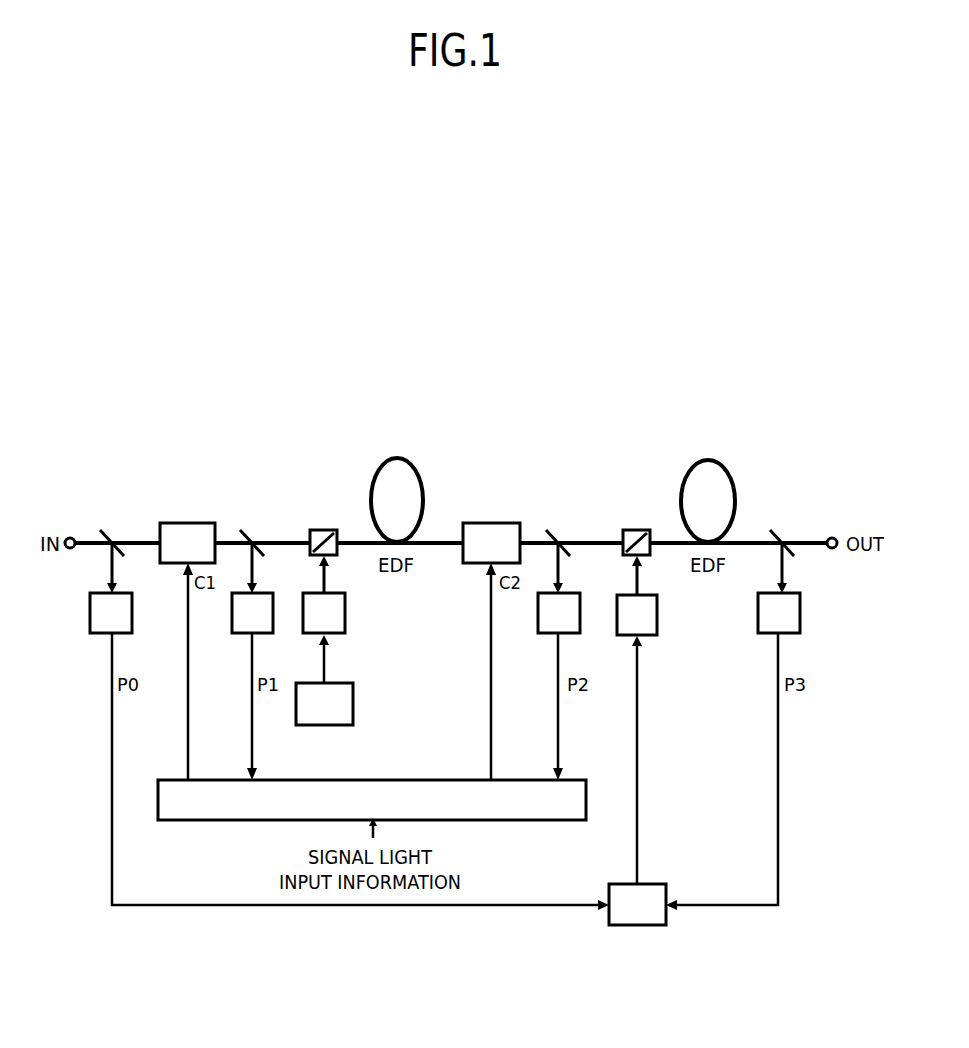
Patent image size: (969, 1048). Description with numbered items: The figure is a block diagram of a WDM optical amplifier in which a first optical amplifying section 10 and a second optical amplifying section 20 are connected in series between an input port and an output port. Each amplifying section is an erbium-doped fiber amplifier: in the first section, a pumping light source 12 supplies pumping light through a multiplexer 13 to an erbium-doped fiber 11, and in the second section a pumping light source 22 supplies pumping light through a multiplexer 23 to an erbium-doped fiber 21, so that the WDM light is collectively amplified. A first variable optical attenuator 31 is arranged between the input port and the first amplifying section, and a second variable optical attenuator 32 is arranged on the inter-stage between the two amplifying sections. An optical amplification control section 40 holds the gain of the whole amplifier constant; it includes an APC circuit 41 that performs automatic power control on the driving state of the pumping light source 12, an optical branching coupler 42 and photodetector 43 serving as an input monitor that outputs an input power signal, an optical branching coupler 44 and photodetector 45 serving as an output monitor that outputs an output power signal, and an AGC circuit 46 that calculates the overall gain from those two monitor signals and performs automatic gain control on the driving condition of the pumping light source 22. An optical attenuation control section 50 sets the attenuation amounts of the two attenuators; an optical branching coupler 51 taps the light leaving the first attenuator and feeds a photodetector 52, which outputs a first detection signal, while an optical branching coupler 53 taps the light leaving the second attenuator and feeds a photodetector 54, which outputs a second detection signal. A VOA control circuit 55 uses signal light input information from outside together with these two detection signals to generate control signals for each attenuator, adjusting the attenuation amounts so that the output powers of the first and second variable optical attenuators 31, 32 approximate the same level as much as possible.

The first optical amplifying section 10 is at (336, 454).
The erbium-doped fiber 11 is at (410, 462).
The pumping light source 12 is at (345, 615).
The multiplexer 13 is at (318, 528).
The second optical amplifying section 20 is at (648, 454).
The erbium-doped fiber 21 is at (722, 462).
The pumping light source 22 is at (657, 615).
The multiplexer 23 is at (631, 528).
The first variable optical attenuator 31 is at (190, 522).
The second variable optical attenuator 32 is at (495, 522).
The optical amplification control section 40 is at (708, 944).
The APC circuit 41 is at (353, 705).
The optical branching coupler 42 is at (122, 540).
The photodetector 43 is at (132, 615).
The optical branching coupler 44 is at (790, 540).
The photodetector 45 is at (800, 615).
The AGC circuit 46 is at (647, 882).
The optical attenuation control section 50 is at (240, 843).
The optical branching coupler 51 is at (261, 540).
The photodetector 52 is at (245, 634).
The optical branching coupler 53 is at (567, 540).
The photodetector 54 is at (552, 634).
The VOA control circuit 55 is at (432, 779).